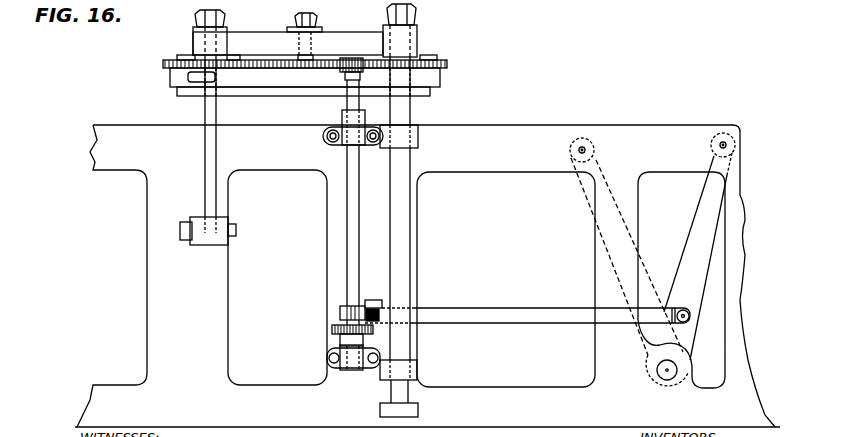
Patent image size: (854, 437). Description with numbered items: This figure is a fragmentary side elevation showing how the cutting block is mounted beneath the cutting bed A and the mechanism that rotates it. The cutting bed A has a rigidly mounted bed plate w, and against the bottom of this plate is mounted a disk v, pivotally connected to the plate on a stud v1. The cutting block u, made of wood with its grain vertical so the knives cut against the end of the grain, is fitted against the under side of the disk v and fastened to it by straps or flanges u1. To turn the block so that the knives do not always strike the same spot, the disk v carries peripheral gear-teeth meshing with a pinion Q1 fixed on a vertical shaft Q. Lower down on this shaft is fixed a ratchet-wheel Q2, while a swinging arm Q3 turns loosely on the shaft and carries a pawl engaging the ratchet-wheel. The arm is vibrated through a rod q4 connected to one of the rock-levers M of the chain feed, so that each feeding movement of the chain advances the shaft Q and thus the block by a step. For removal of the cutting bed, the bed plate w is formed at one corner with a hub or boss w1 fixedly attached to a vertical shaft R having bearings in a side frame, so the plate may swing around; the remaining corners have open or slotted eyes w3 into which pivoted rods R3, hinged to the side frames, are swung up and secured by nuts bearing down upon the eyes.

The cutting bed A is at (427, 219).
The bed plate w is at (307, 46).
The hub or boss w1 is at (417, 33).
The slotted eye w3 is at (203, 42).
The disk v is at (447, 64).
The stud v1 is at (306, 14).
The cutting block u is at (428, 93).
The straps or flanges u1 is at (436, 83).
The vertical shaft Q is at (350, 158).
The pinion Q1 is at (352, 58).
The ratchet-wheel Q2 is at (331, 330).
The swinging arm Q3 is at (340, 312).
The rod q4 is at (467, 312).
The vertical shaft R is at (405, 235).
The pivoted rod R3 is at (207, 185).
The rock-lever M is at (670, 306).